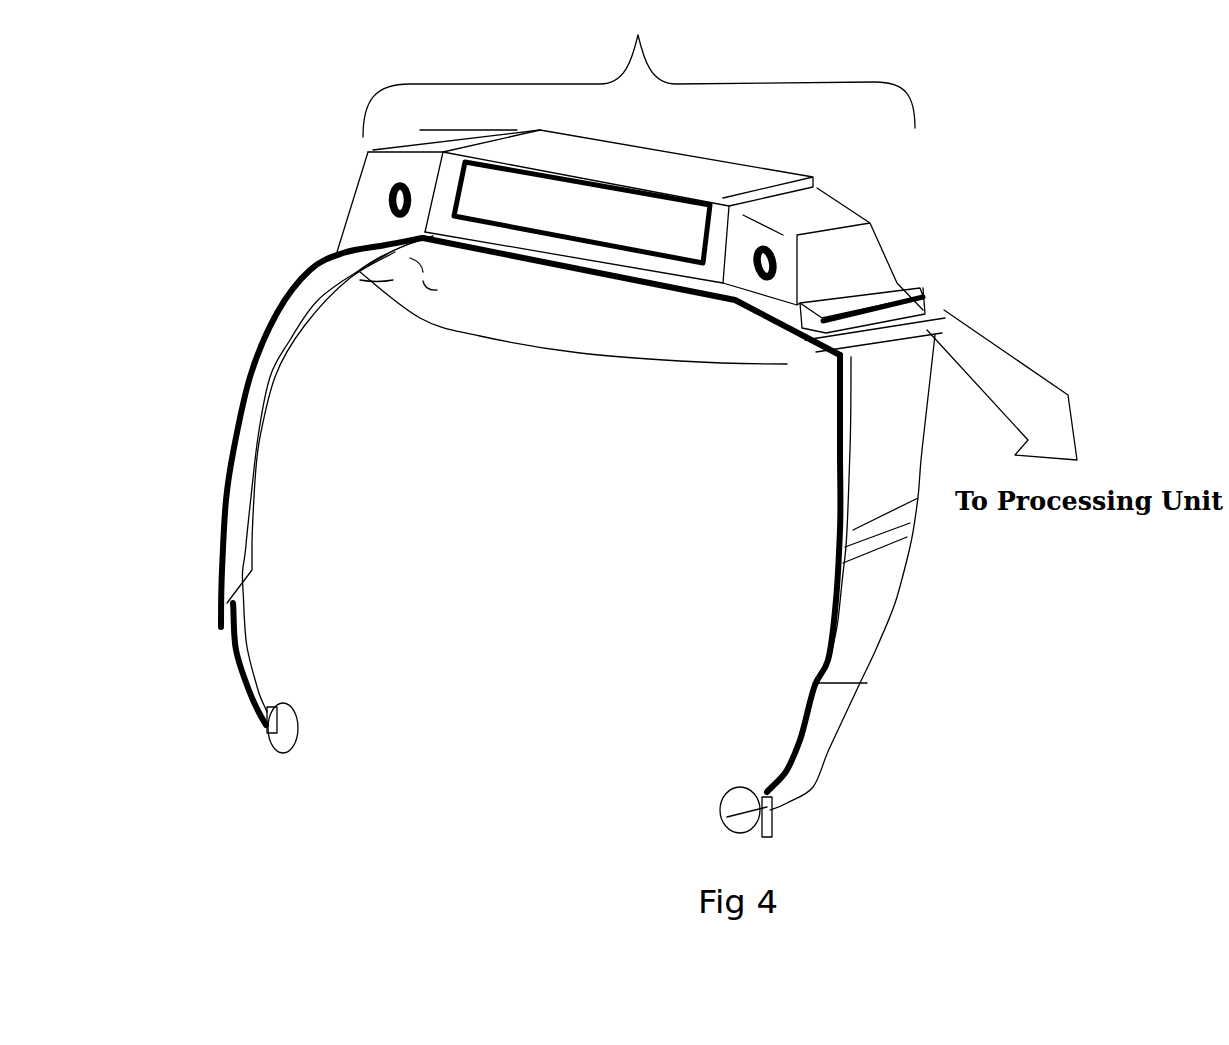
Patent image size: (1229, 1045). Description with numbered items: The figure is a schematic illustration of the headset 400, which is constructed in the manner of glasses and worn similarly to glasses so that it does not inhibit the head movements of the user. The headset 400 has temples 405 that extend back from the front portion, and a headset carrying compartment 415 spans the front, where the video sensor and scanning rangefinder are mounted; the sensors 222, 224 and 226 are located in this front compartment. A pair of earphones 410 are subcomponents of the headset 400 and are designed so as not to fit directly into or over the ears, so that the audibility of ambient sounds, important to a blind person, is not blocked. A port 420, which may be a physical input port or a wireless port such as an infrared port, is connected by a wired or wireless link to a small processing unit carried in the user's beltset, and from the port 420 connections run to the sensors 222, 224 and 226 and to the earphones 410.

The sensor 222 is at (345, 207).
The sensor 224 is at (750, 296).
The sensor 226 is at (574, 228).
The headset 400 is at (975, 204).
The temples 405 is at (783, 646).
The earphones 410 is at (692, 828).
The headset carrying compartment 415 is at (630, 172).
The port 420 is at (966, 292).